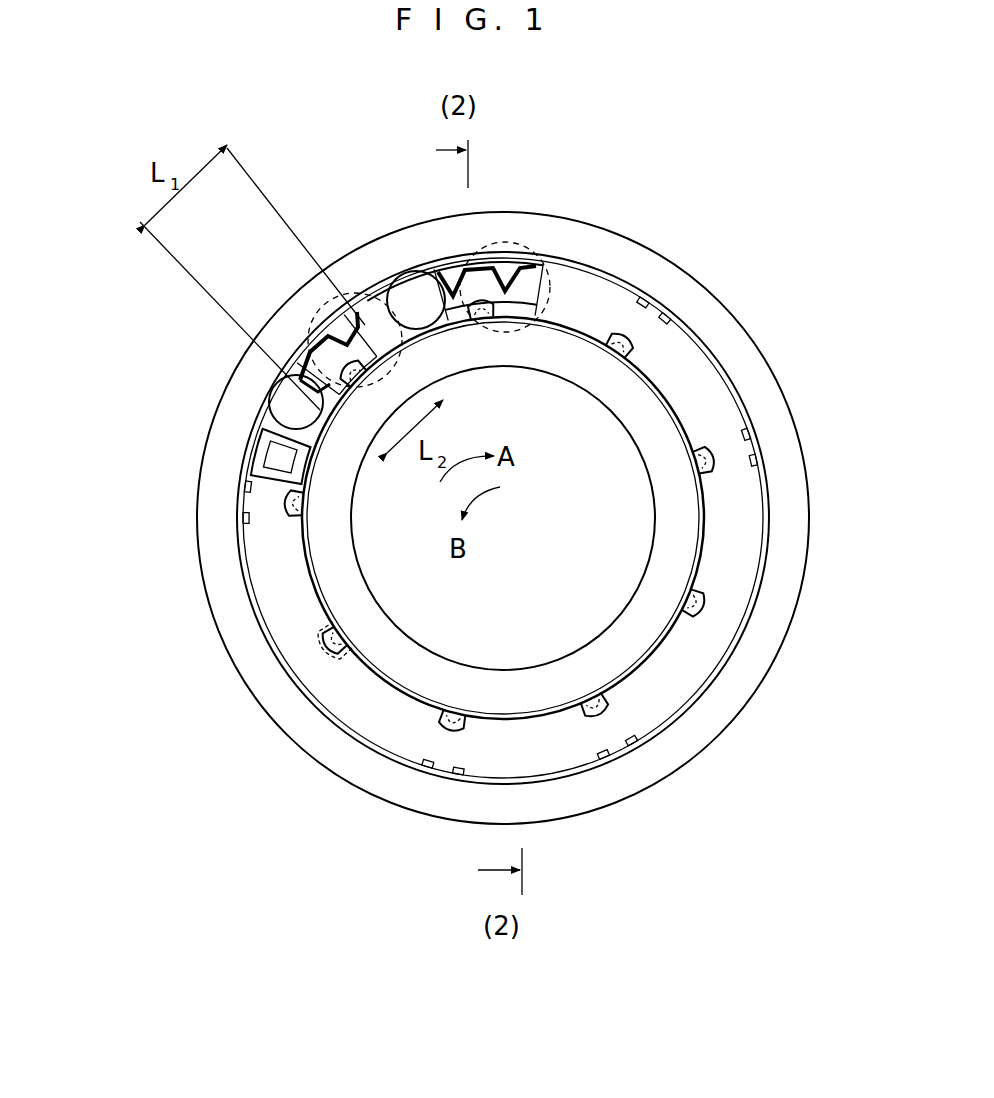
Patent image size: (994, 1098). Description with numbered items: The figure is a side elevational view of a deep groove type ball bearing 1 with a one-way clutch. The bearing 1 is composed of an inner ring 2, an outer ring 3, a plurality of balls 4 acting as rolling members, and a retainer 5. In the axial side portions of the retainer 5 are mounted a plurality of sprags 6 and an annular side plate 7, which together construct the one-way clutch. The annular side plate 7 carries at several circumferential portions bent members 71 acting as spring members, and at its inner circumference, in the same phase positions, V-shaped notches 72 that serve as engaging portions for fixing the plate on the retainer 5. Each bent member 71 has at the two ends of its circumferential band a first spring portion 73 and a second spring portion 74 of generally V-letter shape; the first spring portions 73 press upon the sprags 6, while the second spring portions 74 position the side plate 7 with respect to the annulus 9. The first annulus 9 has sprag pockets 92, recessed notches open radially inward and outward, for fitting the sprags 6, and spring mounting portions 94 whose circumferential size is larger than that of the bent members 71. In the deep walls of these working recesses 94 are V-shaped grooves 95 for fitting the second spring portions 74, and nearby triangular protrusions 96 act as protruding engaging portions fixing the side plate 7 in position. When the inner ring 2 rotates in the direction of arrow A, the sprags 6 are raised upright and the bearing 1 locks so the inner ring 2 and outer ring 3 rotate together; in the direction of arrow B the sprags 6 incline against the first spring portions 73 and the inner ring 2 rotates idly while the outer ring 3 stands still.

The deep groove type ball bearing 1 is at (708, 236).
The inner ring 2 is at (640, 448).
The outer ring 3 is at (722, 320).
The balls 4 is at (510, 240).
The retainer 5 is at (250, 440).
The sprags 6 is at (270, 392).
The first annular side plate 7 is at (262, 596).
The first annulus 9 is at (518, 328).
The bent members 71 is at (305, 345).
The V-shaped notches 72 is at (328, 655).
The first spring portions 73 is at (300, 372).
The second spring portions 74 is at (340, 316).
The sprag pockets 92 is at (315, 392).
The spring mounting portions 94 is at (462, 283).
The V-shaped grooves 95 is at (470, 286).
The triangular protrusions 96 is at (485, 313).